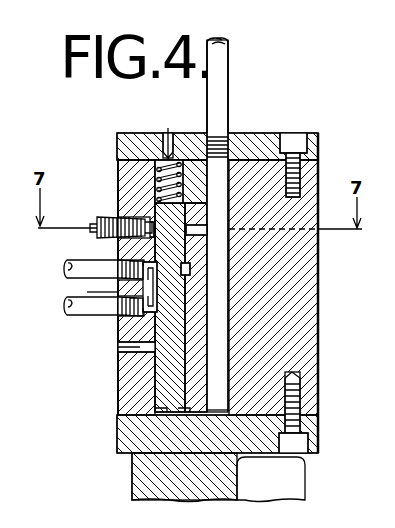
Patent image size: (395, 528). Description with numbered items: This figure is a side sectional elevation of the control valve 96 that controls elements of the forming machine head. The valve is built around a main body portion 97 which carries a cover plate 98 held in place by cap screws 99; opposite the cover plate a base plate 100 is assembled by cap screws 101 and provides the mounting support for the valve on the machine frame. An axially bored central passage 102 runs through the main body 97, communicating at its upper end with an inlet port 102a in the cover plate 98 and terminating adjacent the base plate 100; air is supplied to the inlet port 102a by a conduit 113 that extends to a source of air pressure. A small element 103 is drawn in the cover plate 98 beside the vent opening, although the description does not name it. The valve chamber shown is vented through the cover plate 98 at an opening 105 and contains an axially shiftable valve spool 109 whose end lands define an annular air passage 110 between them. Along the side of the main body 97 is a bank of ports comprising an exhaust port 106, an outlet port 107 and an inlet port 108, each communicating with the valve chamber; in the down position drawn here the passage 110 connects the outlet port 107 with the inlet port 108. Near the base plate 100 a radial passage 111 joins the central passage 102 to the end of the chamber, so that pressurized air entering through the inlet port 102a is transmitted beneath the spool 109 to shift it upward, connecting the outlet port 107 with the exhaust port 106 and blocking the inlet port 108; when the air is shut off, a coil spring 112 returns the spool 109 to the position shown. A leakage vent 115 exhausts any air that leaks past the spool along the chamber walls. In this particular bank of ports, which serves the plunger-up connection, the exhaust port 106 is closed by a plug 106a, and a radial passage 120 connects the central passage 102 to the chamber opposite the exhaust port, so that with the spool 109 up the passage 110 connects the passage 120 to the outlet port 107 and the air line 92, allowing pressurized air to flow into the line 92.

The air line 92 is at (72, 275).
The control valve 96 is at (265, 124).
The main body portion 97 is at (315, 308).
The cover plate 98 is at (318, 145).
The cap screws 99 is at (295, 142).
The base plate 100 is at (312, 434).
The cap screws 101 is at (307, 460).
The central passage 102 is at (284, 225).
The inlet port 102a is at (216, 118).
The locating pin 103 is at (171, 155).
The openings 105 is at (166, 134).
The exhaust port 106 is at (153, 190).
The plug 106a is at (108, 216).
The outlet port 107 is at (145, 260).
The inlet port 108 is at (150, 322).
The valve spool 109 is at (140, 415).
The annular air passage 110 is at (87, 292).
The radial passage 111 is at (193, 418).
The coil spring 112 is at (150, 182).
The conduit 113 is at (220, 73).
The leakage vent 115 is at (163, 392).
The radial passage 120 is at (195, 229).